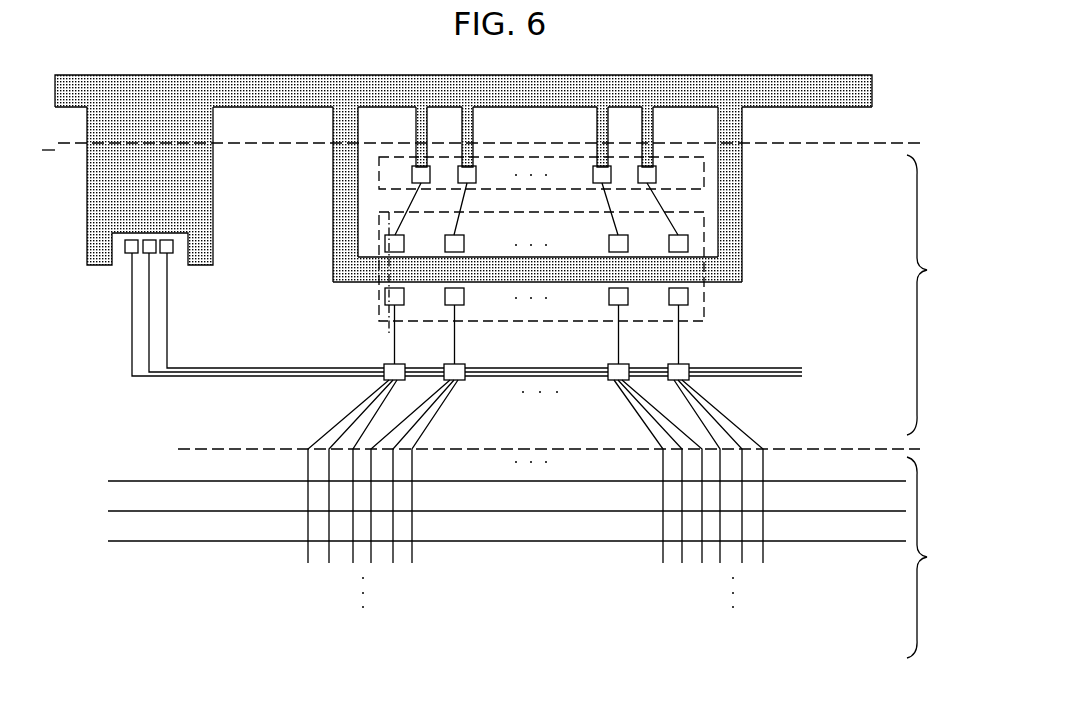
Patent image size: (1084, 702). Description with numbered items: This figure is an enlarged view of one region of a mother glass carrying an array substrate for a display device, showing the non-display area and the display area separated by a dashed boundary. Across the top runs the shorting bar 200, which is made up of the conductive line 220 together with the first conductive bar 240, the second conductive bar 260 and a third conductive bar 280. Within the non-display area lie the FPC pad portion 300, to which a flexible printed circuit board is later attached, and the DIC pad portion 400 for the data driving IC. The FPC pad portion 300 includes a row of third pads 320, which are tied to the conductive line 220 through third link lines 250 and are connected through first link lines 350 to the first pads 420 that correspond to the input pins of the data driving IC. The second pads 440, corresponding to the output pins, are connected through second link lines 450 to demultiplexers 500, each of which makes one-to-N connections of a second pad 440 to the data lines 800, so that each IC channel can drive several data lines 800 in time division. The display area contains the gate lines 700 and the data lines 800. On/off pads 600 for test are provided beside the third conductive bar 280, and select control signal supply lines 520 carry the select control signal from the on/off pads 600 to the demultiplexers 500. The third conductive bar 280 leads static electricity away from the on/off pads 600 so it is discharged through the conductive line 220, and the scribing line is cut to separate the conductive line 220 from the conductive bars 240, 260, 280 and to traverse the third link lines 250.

The shorting bar 200 is at (779, 66).
The conductive line 220 is at (872, 87).
The first conductive bar 240 is at (497, 283).
The third link line 250 is at (416, 130).
The second conductive bar 260 is at (344, 239).
The third conductive bar 280 is at (200, 190).
The FPC pad portion 300 is at (378, 159).
The third pad 320 is at (657, 172).
The first link line 350 is at (412, 182).
The DIC pad portion 400 is at (385, 296).
The first pad 420 is at (688, 243).
The second pad 440 is at (688, 296).
The second link line 450 is at (679, 342).
The demultiplexer 500 is at (689, 366).
The select control signal supply line 520 is at (295, 378).
The on/off pad 600 is at (171, 256).
The gate line 700 is at (205, 480).
The data line 800 is at (371, 548).